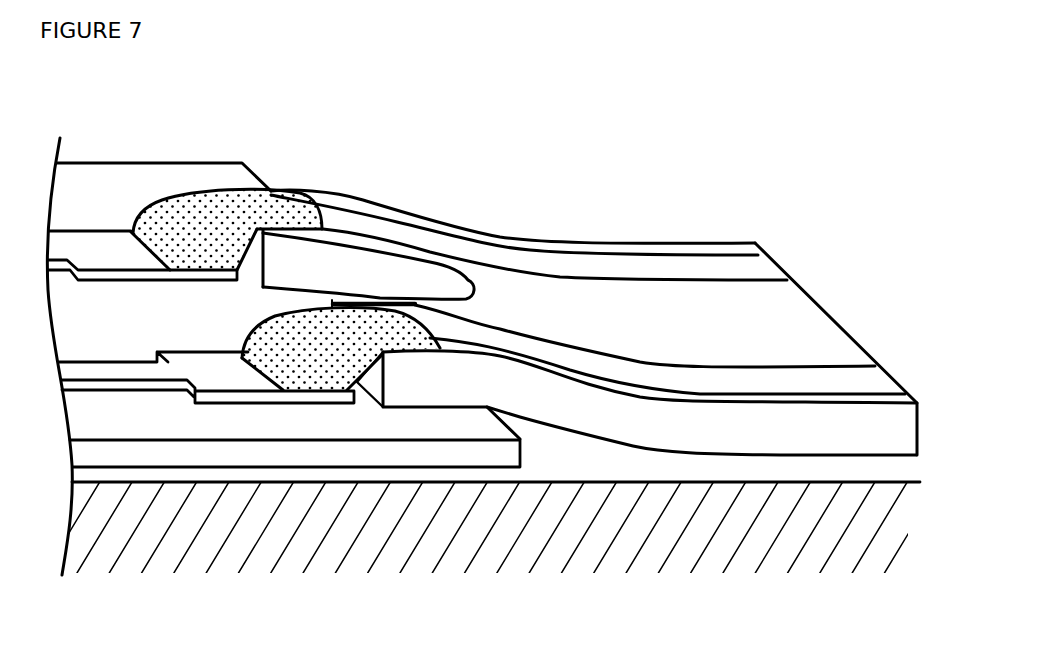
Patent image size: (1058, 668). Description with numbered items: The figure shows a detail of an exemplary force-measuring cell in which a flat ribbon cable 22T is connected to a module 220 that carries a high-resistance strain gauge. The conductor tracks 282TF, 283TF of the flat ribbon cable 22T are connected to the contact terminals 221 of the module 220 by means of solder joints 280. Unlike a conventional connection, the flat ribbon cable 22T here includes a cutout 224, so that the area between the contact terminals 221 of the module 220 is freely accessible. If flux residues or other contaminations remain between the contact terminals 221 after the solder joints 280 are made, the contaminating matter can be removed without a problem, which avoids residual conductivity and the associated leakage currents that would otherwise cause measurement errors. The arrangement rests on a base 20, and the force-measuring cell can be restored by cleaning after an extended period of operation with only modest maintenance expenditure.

The substrate 20 is at (687, 520).
The module 220 is at (343, 452).
The contact terminals 221 is at (104, 400).
The cutout 224 is at (368, 280).
The solder joints 280 is at (192, 223).
The flat ribbon cable 22T is at (415, 214).
The conductor track 282TF is at (625, 275).
The conductor track 283TF is at (510, 340).